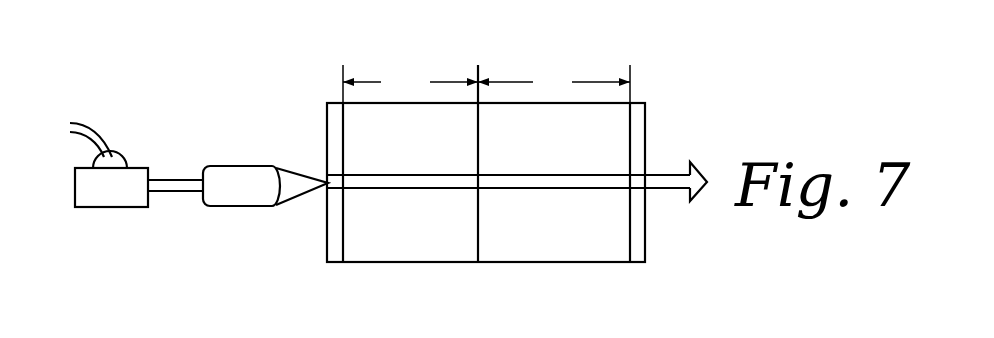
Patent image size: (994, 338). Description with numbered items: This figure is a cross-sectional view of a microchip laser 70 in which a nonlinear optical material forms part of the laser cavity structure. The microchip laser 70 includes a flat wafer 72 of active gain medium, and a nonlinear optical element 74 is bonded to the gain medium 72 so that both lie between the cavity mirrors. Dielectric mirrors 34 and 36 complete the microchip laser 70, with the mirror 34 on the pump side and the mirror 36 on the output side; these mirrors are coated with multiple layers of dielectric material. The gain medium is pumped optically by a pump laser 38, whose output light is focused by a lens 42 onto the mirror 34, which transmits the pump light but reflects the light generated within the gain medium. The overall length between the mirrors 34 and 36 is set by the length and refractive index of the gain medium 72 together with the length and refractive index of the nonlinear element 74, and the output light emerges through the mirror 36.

The microchip laser 70 is at (654, 66).
The mirror 34 is at (328, 102).
The mirror 36 is at (635, 102).
The pump laser 38 is at (108, 207).
The lens 42 is at (247, 163).
The flat wafer of active gain medium 72 is at (410, 255).
The nonlinear optical element 74 is at (552, 250).